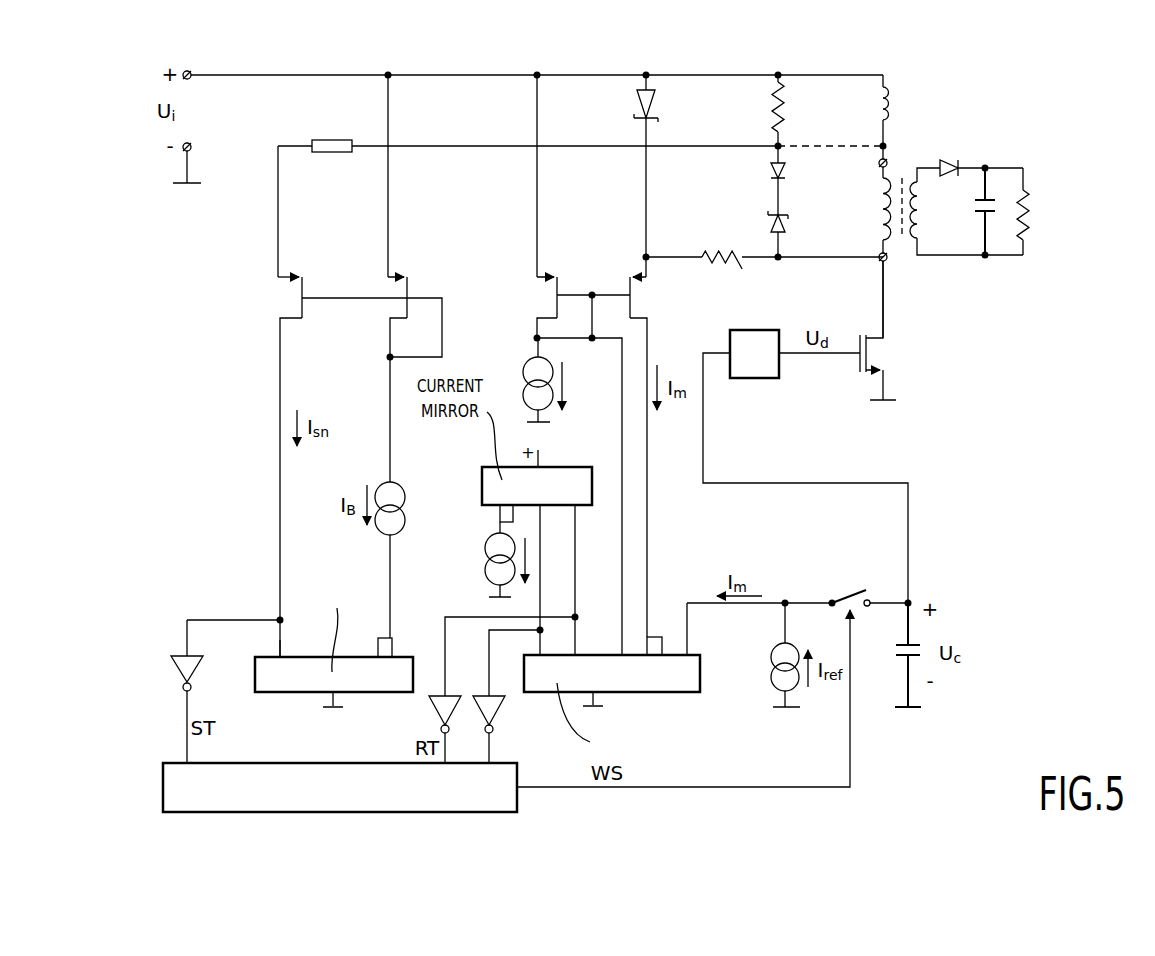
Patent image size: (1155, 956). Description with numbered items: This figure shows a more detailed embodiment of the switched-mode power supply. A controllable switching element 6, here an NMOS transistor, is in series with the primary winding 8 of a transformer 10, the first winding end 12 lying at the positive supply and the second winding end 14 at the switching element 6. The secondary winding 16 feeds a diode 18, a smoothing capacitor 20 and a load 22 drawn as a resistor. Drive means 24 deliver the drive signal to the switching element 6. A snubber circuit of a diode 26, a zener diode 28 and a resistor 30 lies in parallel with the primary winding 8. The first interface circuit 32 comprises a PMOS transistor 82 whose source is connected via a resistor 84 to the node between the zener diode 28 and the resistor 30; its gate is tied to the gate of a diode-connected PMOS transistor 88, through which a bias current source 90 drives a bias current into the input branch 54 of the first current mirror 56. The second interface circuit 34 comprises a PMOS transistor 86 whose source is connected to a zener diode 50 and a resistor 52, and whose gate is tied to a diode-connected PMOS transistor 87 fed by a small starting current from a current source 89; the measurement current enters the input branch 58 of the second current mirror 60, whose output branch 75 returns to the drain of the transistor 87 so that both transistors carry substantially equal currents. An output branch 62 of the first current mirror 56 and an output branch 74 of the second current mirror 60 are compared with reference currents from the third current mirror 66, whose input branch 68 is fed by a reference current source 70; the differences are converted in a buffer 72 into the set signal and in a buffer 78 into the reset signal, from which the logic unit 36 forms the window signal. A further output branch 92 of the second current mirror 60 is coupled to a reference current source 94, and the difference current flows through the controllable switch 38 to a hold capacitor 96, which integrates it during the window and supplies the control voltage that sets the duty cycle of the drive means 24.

The controllable switching element 6 is at (874, 351).
The primary winding 8 is at (879, 208).
The transformer 10 is at (902, 170).
The first winding end 12 is at (878, 164).
The second winding end 14 is at (880, 263).
The secondary winding 16 is at (915, 250).
The diode 18 is at (960, 160).
The smoothing capacitor 20 is at (980, 220).
The load 22 is at (1030, 213).
The drive means 24 is at (767, 380).
The diode 26 is at (770, 228).
The zener diode 28 is at (770, 175).
The resistor 30 is at (770, 105).
The first interface circuit 32 is at (304, 211).
The second interface circuit 34 is at (661, 224).
The logic unit 36 is at (347, 763).
The controllable switch 38 is at (848, 592).
The zener diode 50 is at (637, 98).
The resistor 52 is at (732, 272).
The input branch 54 is at (393, 657).
The first current mirror 56 is at (303, 694).
The input branch 58 is at (648, 634).
The second current mirror 60 is at (668, 694).
The output branch 62 is at (285, 657).
The third current mirror 66 is at (579, 467).
The input branch 68 is at (497, 511).
The reference current source 70 is at (487, 557).
The buffer 72 is at (173, 666).
The output branch 74 is at (534, 656).
The output branch 75 is at (580, 652).
The buffer 78 is at (431, 707).
The PMOS transistor 82 is at (303, 284).
The resistor 84 is at (330, 140).
The PMOS transistor 86 is at (627, 281).
The diode-connected PMOS transistor 87 is at (559, 281).
The diode-connected PMOS transistor 88 is at (408, 284).
The current source 89 is at (526, 361).
The bias current source 90 is at (402, 487).
The output branch 92 is at (692, 657).
The reference current source 94 is at (770, 680).
The hold capacitor 96 is at (893, 655).